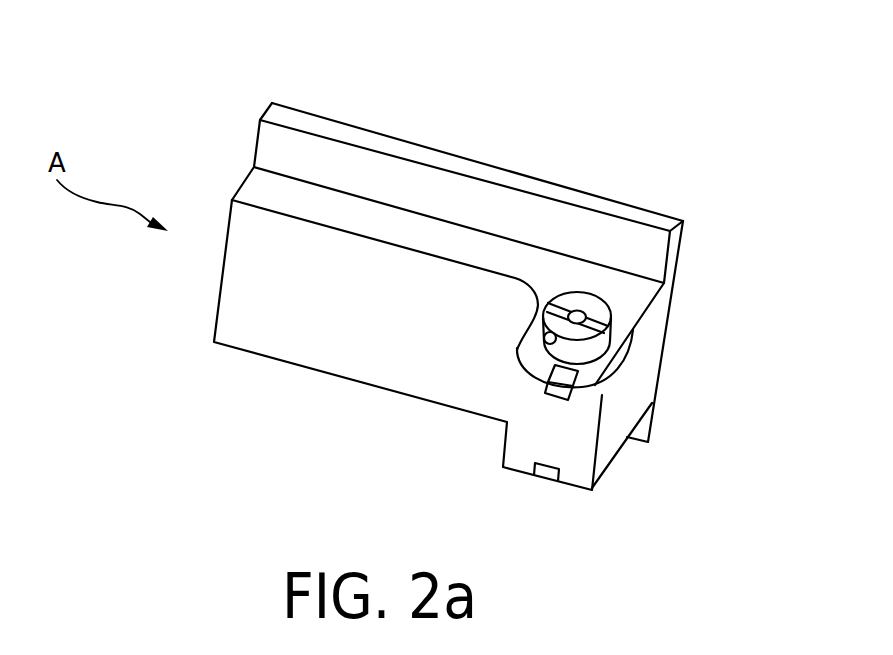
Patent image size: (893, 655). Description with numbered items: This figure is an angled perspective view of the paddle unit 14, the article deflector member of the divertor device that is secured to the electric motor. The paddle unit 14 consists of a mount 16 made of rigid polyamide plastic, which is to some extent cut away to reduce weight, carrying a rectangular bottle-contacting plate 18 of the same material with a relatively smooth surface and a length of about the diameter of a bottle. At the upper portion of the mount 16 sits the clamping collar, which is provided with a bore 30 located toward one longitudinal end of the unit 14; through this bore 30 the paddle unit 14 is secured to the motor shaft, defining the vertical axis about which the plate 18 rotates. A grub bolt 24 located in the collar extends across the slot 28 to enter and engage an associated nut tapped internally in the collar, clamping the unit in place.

The paddle unit 14 is at (507, 127).
The mount 16 is at (370, 358).
The bottle-contacting plate 18 is at (680, 245).
The grub bolt 24 is at (544, 339).
The slot 28 is at (606, 323).
The bore 30 is at (579, 308).